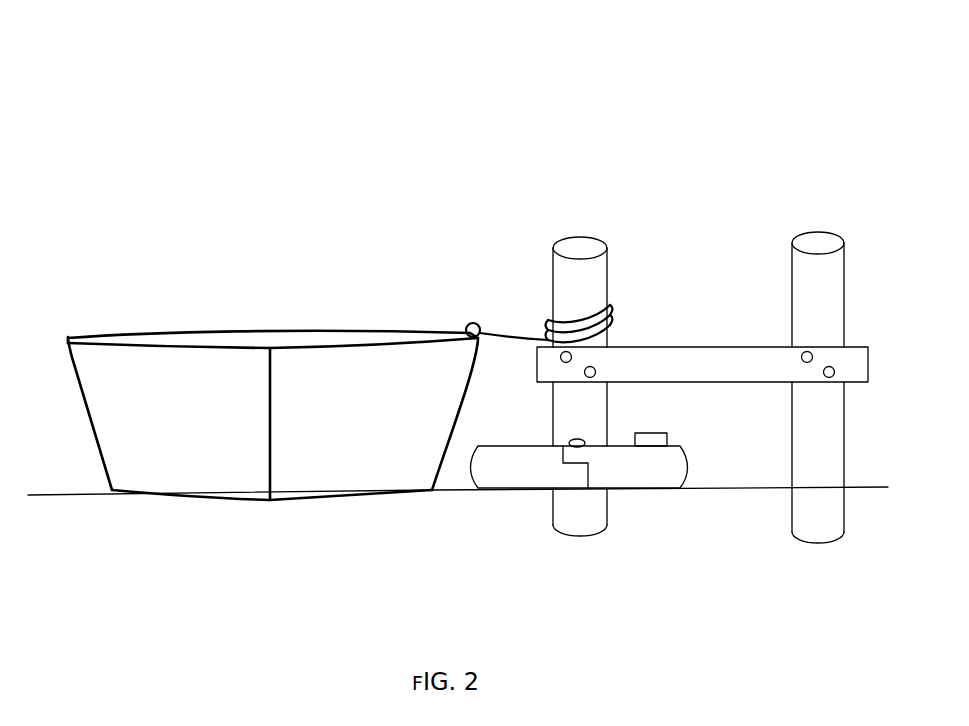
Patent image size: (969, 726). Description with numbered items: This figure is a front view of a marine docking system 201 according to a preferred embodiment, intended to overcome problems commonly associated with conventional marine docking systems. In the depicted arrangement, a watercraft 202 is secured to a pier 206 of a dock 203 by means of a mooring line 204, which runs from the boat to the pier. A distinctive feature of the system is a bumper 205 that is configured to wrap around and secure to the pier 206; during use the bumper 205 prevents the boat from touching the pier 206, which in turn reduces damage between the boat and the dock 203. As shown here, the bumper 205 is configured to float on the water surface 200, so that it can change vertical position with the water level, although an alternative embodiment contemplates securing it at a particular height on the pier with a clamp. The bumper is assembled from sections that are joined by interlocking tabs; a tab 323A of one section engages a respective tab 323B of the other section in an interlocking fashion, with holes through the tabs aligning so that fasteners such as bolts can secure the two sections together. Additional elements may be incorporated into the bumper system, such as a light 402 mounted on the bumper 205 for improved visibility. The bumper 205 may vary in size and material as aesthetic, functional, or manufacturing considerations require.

The water surface 200 is at (780, 488).
The marine docking system 201 is at (297, 105).
The watercraft 202 is at (93, 428).
The dock 203 is at (677, 346).
The mooring line 204 is at (549, 318).
The bumper 205 is at (573, 504).
The pier 206 is at (608, 270).
The tab 323A is at (560, 458).
The tab 323B is at (584, 483).
The light 402 is at (653, 433).